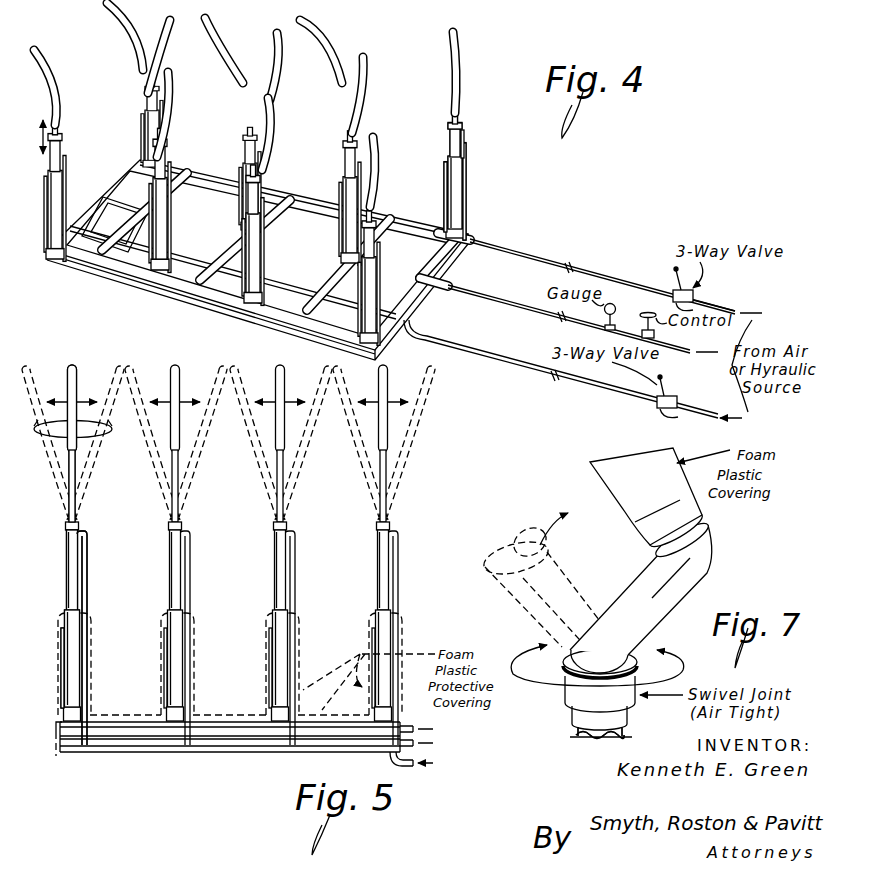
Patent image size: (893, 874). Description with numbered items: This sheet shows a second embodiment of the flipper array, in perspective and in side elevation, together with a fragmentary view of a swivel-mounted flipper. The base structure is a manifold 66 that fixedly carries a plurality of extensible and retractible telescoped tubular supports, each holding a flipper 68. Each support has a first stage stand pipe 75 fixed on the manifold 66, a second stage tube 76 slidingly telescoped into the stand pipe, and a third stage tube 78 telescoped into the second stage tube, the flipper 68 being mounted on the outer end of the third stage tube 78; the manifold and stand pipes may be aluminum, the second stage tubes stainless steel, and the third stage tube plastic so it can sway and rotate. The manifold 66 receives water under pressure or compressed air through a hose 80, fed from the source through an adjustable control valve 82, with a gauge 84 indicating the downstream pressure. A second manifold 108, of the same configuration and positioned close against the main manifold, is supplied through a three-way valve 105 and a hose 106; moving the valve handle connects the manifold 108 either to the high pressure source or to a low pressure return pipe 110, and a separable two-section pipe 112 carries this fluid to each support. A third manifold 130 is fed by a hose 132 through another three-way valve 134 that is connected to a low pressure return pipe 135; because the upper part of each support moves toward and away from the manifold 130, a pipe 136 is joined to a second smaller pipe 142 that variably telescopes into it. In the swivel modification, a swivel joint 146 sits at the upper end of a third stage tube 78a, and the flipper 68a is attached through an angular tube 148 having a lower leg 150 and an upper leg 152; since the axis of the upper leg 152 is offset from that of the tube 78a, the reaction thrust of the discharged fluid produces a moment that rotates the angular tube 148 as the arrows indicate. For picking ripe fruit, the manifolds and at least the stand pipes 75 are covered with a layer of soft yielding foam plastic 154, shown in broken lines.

In FIG. 4, the manifold 66 is at (413, 220).
In FIG. 5, the manifold 66 is at (112, 730).
In FIG. 4, the flipper 68 is at (173, 40).
In FIG. 5, the flipper 68 is at (67, 383).
In FIG. 7, the flipper 68a is at (606, 481).
In FIG. 4, the first stage stand pipe 75 is at (454, 180).
In FIG. 5, the first stage stand pipe 75 is at (73, 654).
In FIG. 4, the second stage tube 76 is at (452, 139).
In FIG. 5, the second stage tube 76 is at (66, 560).
In FIG. 4, the third stage tube 78 is at (457, 116).
In FIG. 5, the third stage tube 78 is at (171, 470).
In FIG. 7, the third stage tube 78a is at (577, 738).
In FIG. 4, the hose 80 is at (494, 301).
In FIG. 5, the hose 80 is at (413, 743).
In FIG. 4, the control valve 82 is at (643, 326).
In FIG. 4, the gauge 84 is at (614, 308).
In FIG. 4, the three-way valve 105 is at (668, 397).
In FIG. 4, the hose 106 is at (477, 343).
In FIG. 5, the hose 106 is at (407, 767).
In FIG. 4, the second manifold 108 is at (447, 267).
In FIG. 5, the second manifold 108 is at (98, 753).
In FIG. 4, the low pressure return pipe 110 is at (672, 420).
In FIG. 4, the pipe 112 is at (442, 182).
In FIG. 5, the pipe 112 is at (64, 663).
In FIG. 4, the third manifold 130 is at (437, 268).
In FIG. 5, the third manifold 130 is at (120, 742).
In FIG. 4, the hose 132 is at (510, 251).
In FIG. 5, the hose 132 is at (407, 725).
In FIG. 4, the three-way valve 134 is at (697, 296).
In FIG. 4, the low pressure return pipe 135 is at (710, 305).
In FIG. 4, the pipe 136 is at (467, 194).
In FIG. 4, the second smaller pipe 142 is at (464, 143).
In FIG. 5, the second smaller pipe 142 is at (83, 597).
In FIG. 7, the swivel joint 146 is at (567, 697).
In FIG. 7, the angular tube 148 is at (713, 562).
In FIG. 7, the lower leg 150 is at (668, 603).
In FIG. 7, the upper leg 152 is at (695, 538).
In FIG. 5, the layer of soft yielding foam plastic 154 is at (230, 712).